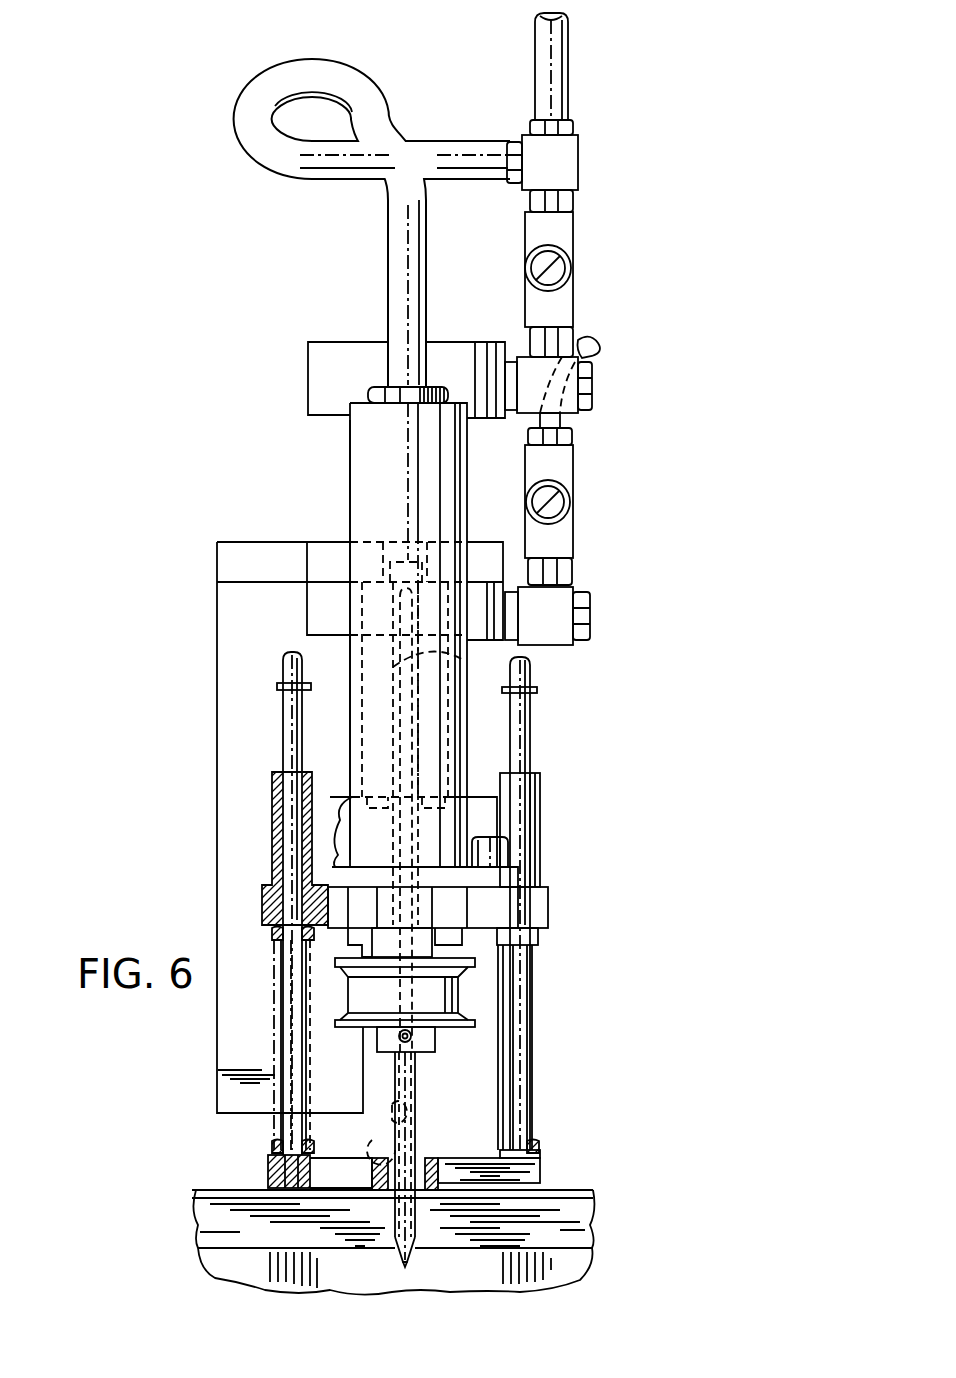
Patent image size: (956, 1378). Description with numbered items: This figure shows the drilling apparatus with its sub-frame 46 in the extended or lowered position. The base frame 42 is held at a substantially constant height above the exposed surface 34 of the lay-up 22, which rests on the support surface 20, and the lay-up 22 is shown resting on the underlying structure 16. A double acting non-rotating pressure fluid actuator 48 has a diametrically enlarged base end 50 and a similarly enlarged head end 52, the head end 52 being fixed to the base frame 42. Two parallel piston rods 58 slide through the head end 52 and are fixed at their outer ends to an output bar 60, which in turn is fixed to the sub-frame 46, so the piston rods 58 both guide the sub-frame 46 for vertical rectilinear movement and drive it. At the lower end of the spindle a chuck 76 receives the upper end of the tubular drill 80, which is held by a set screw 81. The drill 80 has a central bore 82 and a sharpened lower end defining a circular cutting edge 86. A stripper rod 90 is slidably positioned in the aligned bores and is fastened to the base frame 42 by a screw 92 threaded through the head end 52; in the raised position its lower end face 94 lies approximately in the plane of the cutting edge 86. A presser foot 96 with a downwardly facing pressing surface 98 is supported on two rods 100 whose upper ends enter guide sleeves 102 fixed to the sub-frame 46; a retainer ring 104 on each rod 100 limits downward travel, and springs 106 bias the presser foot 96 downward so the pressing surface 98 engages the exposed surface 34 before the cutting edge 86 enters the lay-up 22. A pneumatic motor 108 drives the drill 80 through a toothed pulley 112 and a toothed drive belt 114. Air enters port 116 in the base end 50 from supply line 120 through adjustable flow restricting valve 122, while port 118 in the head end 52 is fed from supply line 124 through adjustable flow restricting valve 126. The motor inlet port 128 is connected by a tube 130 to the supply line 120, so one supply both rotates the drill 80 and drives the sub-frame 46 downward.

The base 16 is at (235, 1272).
The support surface 20 is at (215, 1245).
The lay-up 22 is at (220, 1219).
The exposed surface 34 is at (236, 1190).
The base frame 42 is at (217, 880).
The sub-frame 46 is at (548, 912).
The pressure fluid actuator 48 is at (386, 635).
The base end 50 is at (322, 356).
The head end 52 is at (318, 606).
The piston rods 58 is at (452, 684).
The output bar 60 is at (470, 797).
The chuck 76 is at (435, 1040).
The drill 80 is at (417, 1143).
The set screw 81 is at (410, 1030).
The bore 82 is at (386, 1148).
The cutting edge 86 is at (410, 1260).
The stripper rod 90 is at (412, 1068).
The screw 92 is at (406, 558).
The lower end face 94 is at (410, 1108).
The presser foot 96 is at (515, 1192).
The pressing surface 98 is at (518, 1196).
The rods 100 is at (292, 733).
The guide sleeves 102 is at (280, 813).
The retainer ring 104 is at (279, 690).
The springs 106 is at (275, 1150).
The pressure fluid actuated motor 108 is at (325, 640).
The toothed pulley 112 is at (358, 1028).
The toothed drive belt 114 is at (458, 983).
The port 116 is at (515, 360).
The port 118 is at (508, 614).
The supply line 120 is at (567, 32).
The adjustable flow restricting valve 122 is at (573, 218).
The supply line 124 is at (582, 342).
The adjustable flow restricting valve 126 is at (573, 458).
The inlet port 128 is at (434, 388).
The tube 130 is at (372, 92).